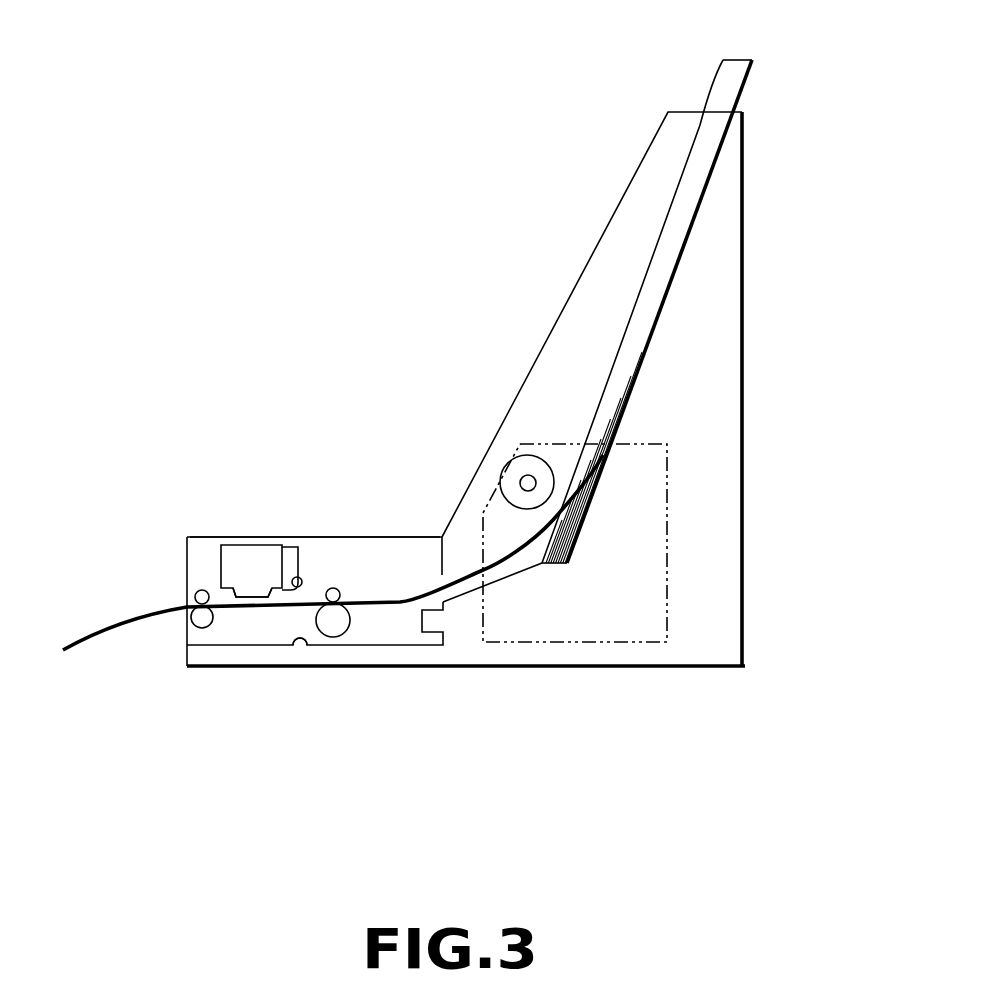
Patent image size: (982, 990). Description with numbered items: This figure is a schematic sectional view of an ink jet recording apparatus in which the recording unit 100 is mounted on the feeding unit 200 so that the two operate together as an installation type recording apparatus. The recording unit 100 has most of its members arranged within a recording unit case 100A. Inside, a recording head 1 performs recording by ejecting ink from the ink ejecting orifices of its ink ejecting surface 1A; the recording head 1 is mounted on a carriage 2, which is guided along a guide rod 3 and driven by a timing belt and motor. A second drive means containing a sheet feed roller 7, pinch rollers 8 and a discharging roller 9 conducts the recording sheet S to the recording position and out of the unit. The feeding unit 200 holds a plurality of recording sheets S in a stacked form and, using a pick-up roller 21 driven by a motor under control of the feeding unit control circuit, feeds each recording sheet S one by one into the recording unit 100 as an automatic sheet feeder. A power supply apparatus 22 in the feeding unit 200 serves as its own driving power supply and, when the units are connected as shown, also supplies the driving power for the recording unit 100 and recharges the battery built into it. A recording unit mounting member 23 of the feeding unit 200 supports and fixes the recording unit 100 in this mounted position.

The recording sheet S is at (723, 68).
The feeding unit 200 is at (753, 231).
The recording unit 100 is at (167, 553).
The recording unit case 100A is at (202, 536).
The recording head 1 is at (240, 555).
The ink ejecting surface 1A is at (253, 593).
The carriage 2 is at (287, 553).
The guide rod 3 is at (302, 580).
The sheet feed roller 7 is at (335, 630).
The pinch rollers 8 is at (338, 590).
The discharging roller 9 is at (193, 620).
The pick-up roller 21 is at (507, 468).
The power supply apparatus 22 is at (653, 455).
The recording unit mounting member 23 is at (295, 645).